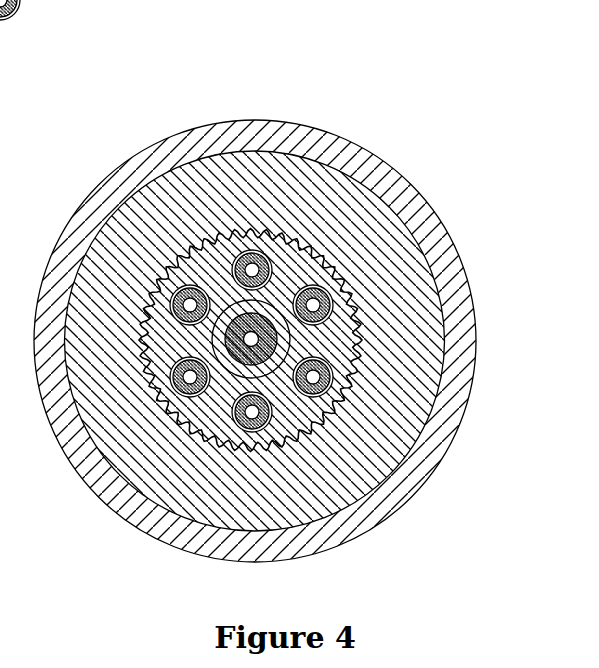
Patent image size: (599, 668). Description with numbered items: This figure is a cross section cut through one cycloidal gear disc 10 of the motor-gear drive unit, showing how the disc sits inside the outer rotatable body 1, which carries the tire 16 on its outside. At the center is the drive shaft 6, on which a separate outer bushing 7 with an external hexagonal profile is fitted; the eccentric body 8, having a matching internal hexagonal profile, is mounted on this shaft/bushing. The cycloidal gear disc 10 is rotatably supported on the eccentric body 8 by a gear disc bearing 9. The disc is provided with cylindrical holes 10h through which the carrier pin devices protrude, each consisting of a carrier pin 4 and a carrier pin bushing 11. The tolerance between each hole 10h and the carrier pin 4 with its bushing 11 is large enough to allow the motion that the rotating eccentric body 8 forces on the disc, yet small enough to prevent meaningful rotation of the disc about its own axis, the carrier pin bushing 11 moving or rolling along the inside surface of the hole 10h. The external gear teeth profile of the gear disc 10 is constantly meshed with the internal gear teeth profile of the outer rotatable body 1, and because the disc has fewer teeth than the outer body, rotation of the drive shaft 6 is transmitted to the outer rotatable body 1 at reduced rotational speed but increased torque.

The tire 16 is at (95, 205).
The outer rotatable body 1 is at (163, 220).
The cycloidal gear disc with external gear teeth profile 10 is at (205, 262).
The drive shaft 6 is at (235, 240).
The carrier pin bushing 11 is at (254, 312).
The eccentric body 8 is at (265, 300).
The separate outer bushing 7 is at (249, 318).
The gear disc bearing 9 is at (300, 270).
The carrier pin 4 is at (366, 195).
The hole 10h is at (400, 190).